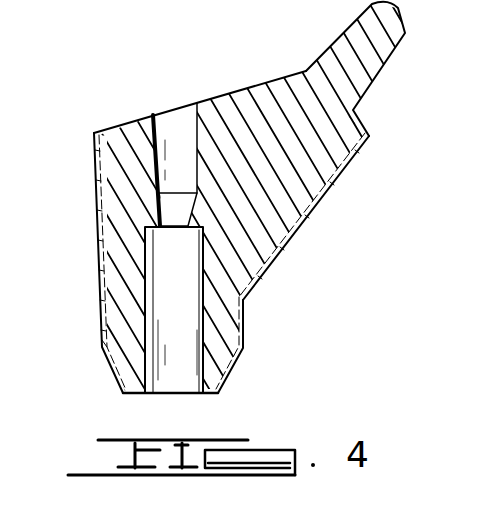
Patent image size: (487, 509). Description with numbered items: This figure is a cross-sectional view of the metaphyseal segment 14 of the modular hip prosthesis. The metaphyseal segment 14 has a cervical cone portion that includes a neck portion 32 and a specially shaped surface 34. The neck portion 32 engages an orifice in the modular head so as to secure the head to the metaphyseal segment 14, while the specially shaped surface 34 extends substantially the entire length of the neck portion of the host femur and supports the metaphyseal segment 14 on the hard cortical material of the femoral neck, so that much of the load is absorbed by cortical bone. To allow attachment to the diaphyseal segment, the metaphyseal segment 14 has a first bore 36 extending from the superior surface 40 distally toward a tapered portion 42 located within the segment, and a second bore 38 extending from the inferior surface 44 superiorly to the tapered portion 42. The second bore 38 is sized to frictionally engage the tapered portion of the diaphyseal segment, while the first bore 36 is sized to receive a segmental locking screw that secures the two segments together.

The metaphyseal segment 14 is at (103, 305).
The neck portion 32 is at (383, 50).
The specially shaped surface 34 is at (321, 206).
The first bore 36 is at (158, 147).
The second bore 38 is at (145, 271).
The superior surface 40 is at (119, 126).
The tapered portion 42 is at (161, 211).
The inferior surface 44 is at (207, 394).